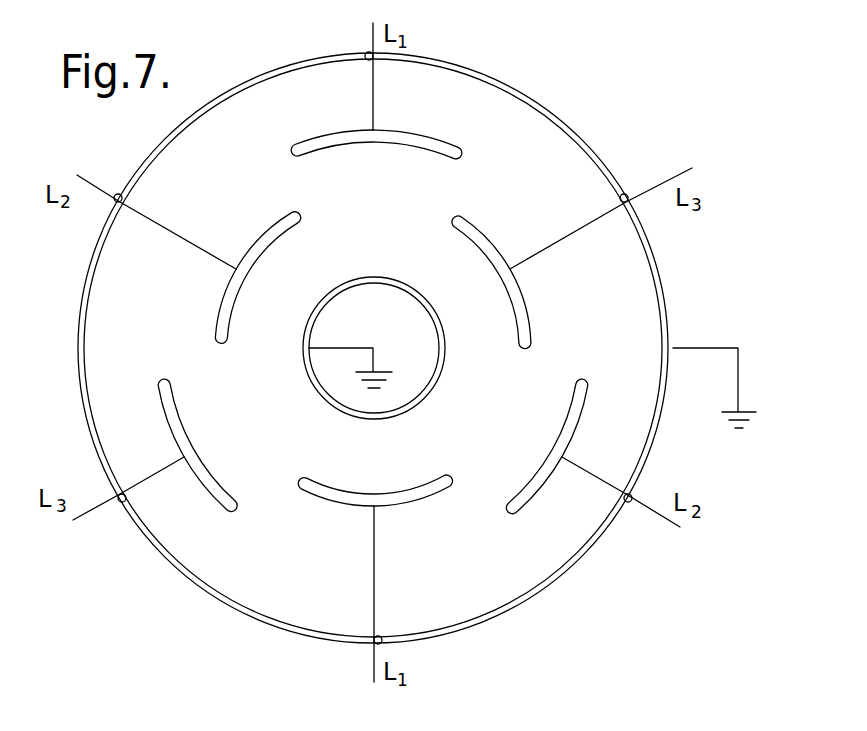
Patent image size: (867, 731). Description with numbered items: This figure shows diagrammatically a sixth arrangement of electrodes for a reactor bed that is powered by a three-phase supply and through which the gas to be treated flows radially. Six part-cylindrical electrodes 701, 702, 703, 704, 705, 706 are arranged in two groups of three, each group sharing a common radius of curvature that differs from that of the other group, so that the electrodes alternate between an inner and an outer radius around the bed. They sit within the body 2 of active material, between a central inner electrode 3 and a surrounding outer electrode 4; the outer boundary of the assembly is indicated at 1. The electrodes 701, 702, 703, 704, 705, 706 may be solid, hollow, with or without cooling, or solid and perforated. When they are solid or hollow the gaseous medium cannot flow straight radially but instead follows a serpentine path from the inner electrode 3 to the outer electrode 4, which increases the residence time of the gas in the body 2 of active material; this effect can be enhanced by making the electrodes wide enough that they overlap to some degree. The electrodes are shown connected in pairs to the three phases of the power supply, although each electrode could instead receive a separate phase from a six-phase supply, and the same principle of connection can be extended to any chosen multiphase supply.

The reactor vessel 1 is at (557, 104).
The body of active material 2 is at (626, 308).
The inner electrode 3 is at (407, 295).
The outer electrode 4 is at (78, 339).
The part-cylindrical electrode 701 is at (447, 147).
The part-cylindrical electrode 702 is at (532, 345).
The part-cylindrical electrode 703 is at (512, 513).
The part-cylindrical electrode 704 is at (421, 486).
The part-cylindrical electrode 705 is at (236, 508).
The part-cylindrical electrode 706 is at (282, 224).